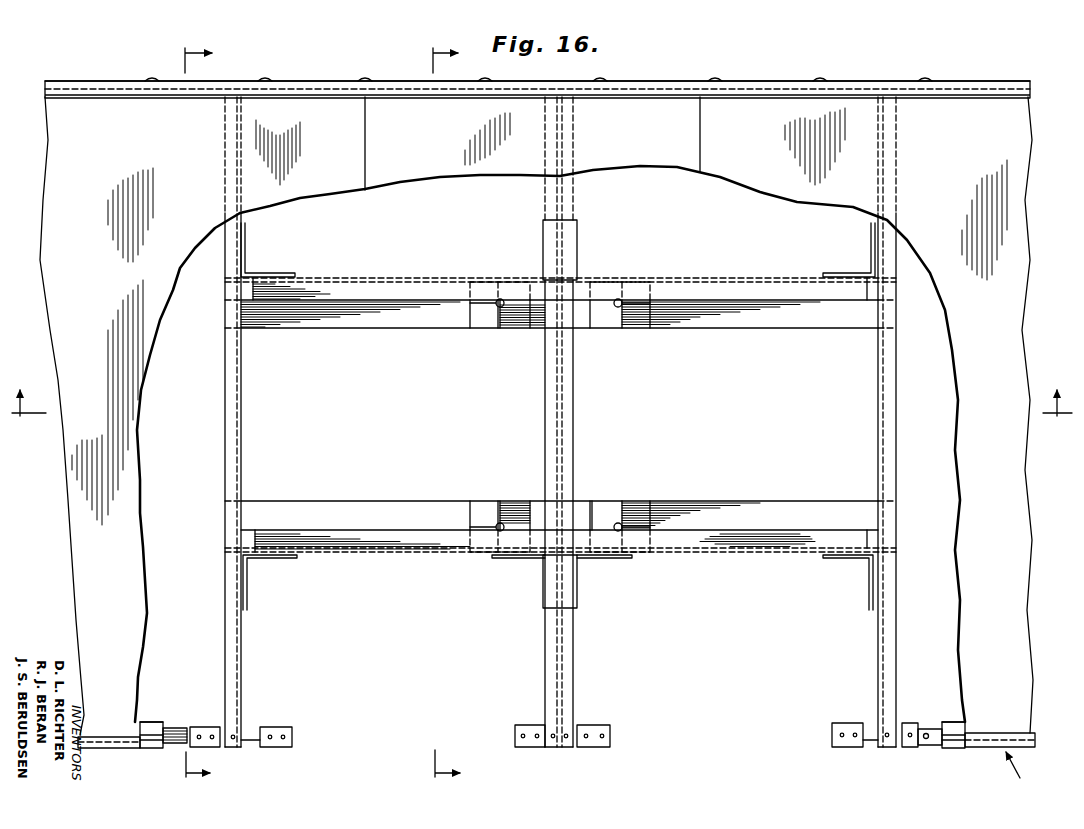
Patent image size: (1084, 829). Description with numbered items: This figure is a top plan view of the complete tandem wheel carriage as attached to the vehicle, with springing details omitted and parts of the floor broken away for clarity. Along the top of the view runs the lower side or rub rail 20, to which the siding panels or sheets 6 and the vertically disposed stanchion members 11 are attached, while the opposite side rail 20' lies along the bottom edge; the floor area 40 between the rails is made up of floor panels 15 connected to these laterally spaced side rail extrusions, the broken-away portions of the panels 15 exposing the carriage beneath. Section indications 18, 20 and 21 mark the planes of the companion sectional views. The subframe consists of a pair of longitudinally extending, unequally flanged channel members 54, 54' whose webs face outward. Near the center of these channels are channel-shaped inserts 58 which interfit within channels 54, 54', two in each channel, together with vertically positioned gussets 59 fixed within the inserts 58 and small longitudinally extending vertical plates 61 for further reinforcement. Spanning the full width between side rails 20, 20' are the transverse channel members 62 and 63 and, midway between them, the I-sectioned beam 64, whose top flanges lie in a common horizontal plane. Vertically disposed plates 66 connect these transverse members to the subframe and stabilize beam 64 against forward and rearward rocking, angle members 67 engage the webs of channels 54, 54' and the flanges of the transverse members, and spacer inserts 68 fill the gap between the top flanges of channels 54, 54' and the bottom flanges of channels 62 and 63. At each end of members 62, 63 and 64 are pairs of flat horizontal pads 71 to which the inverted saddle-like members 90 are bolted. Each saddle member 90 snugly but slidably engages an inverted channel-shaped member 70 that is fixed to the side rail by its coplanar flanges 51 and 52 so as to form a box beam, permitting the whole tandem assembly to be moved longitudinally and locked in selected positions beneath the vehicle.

The panels or sheets 6 is at (290, 81).
The stanchion members 11 is at (152, 77).
The panels 15 is at (55, 222).
The section line 18 is at (540, 412).
The side rail 20 is at (250, 408).
The side rail 20' is at (1025, 773).
The section line 21 is at (435, 408).
The floor area 40 is at (704, 76).
The flange 51 is at (148, 722).
The flange 52 is at (152, 749).
The channel member 54 is at (560, 279).
The channel member 54' is at (560, 550).
The channel-shaped inserts 58 is at (486, 322).
The gussets 59 is at (617, 520).
The plates 61 is at (500, 298).
The channel member 62 is at (243, 440).
The channel member 63 is at (878, 380).
The I-sectioned beam 64 is at (577, 402).
The vertical plates 66 is at (508, 278).
The angle members 67 is at (245, 250).
The inserts 68 is at (258, 290).
The channel-shaped structural member 70 is at (158, 721).
The flat horizontal pads 71 is at (278, 727).
The saddle-like members 90 is at (184, 726).